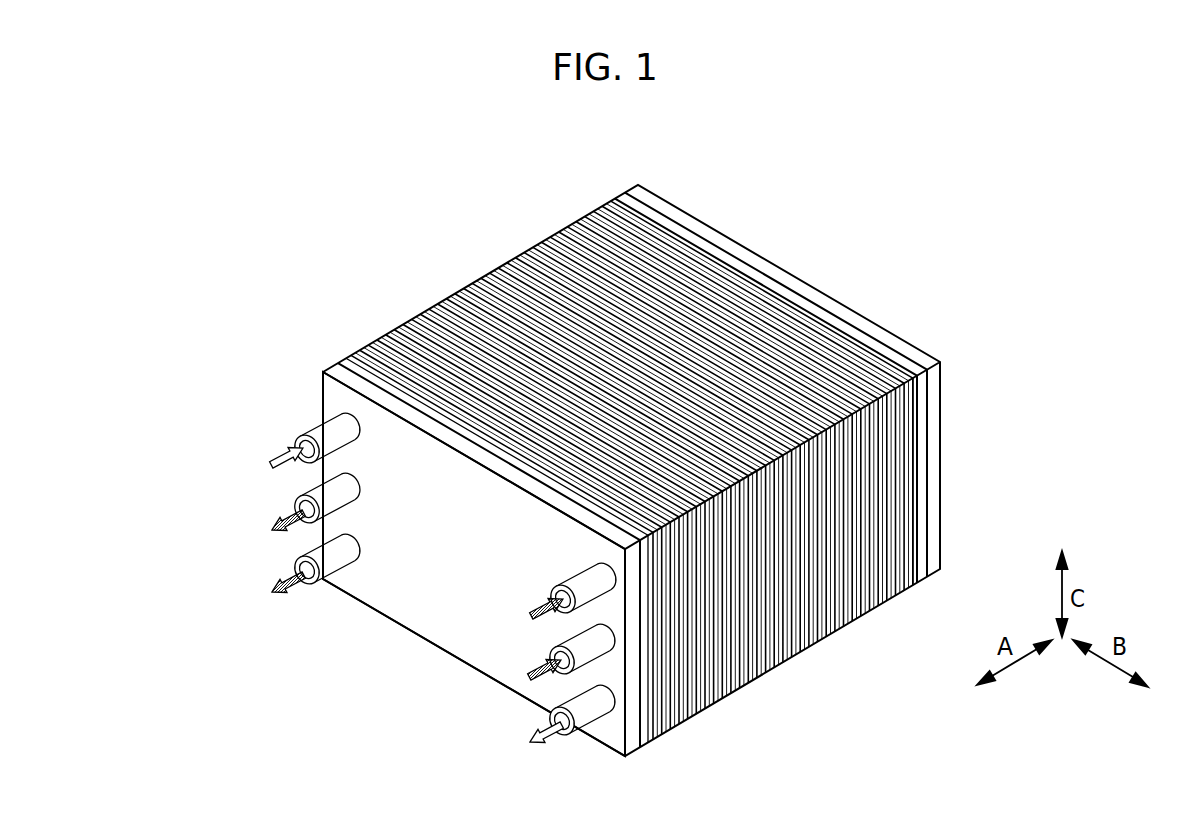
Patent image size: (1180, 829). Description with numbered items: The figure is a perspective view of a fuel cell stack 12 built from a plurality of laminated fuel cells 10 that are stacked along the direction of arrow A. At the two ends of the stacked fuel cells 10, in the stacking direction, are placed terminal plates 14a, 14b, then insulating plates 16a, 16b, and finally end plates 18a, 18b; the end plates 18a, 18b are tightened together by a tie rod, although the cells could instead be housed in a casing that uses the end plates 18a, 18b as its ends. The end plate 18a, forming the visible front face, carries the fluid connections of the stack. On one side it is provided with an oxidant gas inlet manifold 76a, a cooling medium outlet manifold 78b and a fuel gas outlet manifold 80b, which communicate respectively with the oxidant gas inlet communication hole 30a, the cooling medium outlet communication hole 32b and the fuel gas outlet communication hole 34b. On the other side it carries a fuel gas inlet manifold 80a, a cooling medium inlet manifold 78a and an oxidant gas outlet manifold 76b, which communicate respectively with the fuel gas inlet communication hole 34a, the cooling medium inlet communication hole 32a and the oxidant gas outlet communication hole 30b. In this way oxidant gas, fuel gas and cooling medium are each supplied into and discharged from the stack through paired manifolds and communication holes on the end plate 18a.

The fuel cell stack 12 is at (687, 128).
The fuel cell 10 is at (471, 277).
The end plate 18a is at (499, 689).
The end plate 18b is at (823, 283).
The insulating plate 16a is at (645, 747).
The insulating plate 16b is at (922, 397).
The terminal plate 14a is at (653, 738).
The terminal plate 14b is at (915, 440).
The oxidant gas inlet communication hole 30a is at (316, 434).
The oxidant gas outlet communication hole 30b is at (600, 717).
The cooling medium inlet communication hole 32a is at (563, 645).
The cooling medium outlet communication hole 32b is at (315, 495).
The fuel gas inlet communication hole 34a is at (573, 583).
The fuel gas outlet communication hole 34b is at (313, 557).
The oxidant gas inlet manifold 76a is at (250, 433).
The oxidant gas outlet manifold 76b is at (556, 757).
The cooling medium inlet manifold 78a is at (500, 633).
The cooling medium outlet manifold 78b is at (241, 500).
The fuel gas inlet manifold 80a is at (529, 577).
The fuel gas outlet manifold 80b is at (241, 565).